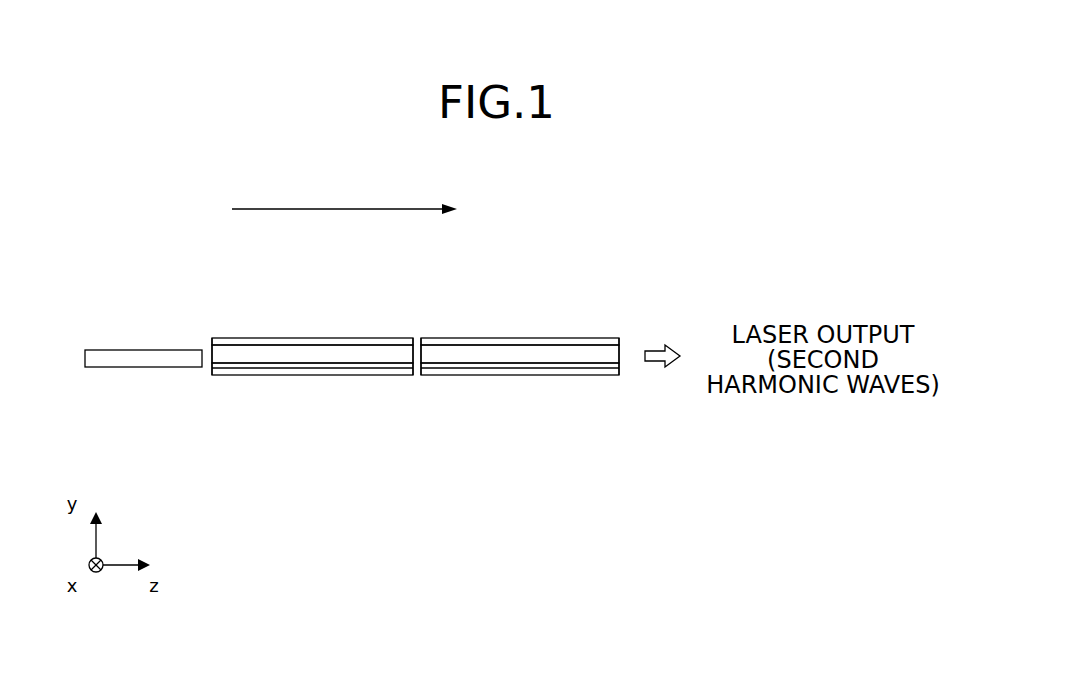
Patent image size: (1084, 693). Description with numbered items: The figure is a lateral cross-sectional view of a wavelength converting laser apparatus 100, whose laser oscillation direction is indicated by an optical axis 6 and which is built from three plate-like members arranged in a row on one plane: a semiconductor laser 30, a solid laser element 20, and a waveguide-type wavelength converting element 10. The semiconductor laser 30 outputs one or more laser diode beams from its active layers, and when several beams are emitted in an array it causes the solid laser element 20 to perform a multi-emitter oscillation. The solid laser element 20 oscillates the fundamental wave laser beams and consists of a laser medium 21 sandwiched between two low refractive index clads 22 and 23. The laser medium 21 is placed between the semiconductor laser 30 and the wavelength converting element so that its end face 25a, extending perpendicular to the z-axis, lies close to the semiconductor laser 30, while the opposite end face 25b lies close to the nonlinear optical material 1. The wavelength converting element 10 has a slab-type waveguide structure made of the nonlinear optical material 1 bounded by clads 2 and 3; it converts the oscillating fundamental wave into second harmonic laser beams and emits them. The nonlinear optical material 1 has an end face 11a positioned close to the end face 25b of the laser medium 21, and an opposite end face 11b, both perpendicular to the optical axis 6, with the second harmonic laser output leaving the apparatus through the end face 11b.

The nonlinear optical material 1 is at (525, 355).
The clad 2 is at (485, 343).
The clad 3 is at (473, 281).
The optical axis 6 is at (367, 207).
The wavelength converting element 10 is at (520, 310).
The end face 11a is at (422, 372).
The end face 11b is at (618, 362).
The solid laser element 20 is at (312, 311).
The laser medium 21 is at (302, 357).
The clad 22 is at (258, 345).
The clad 23 is at (247, 281).
The end face 25a is at (208, 362).
The end face 25b is at (412, 372).
The semiconductor laser 30 is at (147, 348).
The wavelength converting laser apparatus 100 is at (675, 293).